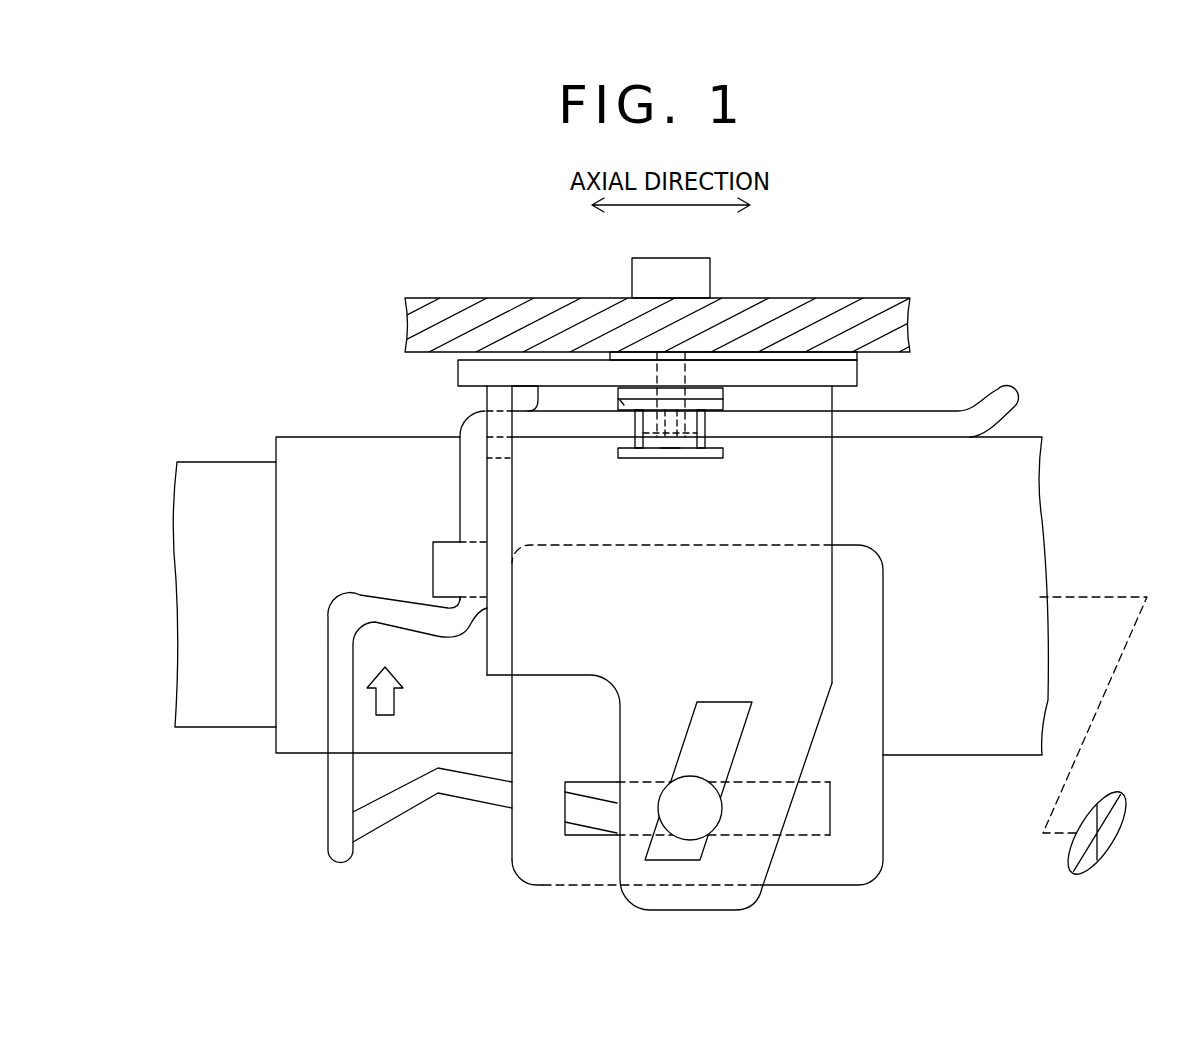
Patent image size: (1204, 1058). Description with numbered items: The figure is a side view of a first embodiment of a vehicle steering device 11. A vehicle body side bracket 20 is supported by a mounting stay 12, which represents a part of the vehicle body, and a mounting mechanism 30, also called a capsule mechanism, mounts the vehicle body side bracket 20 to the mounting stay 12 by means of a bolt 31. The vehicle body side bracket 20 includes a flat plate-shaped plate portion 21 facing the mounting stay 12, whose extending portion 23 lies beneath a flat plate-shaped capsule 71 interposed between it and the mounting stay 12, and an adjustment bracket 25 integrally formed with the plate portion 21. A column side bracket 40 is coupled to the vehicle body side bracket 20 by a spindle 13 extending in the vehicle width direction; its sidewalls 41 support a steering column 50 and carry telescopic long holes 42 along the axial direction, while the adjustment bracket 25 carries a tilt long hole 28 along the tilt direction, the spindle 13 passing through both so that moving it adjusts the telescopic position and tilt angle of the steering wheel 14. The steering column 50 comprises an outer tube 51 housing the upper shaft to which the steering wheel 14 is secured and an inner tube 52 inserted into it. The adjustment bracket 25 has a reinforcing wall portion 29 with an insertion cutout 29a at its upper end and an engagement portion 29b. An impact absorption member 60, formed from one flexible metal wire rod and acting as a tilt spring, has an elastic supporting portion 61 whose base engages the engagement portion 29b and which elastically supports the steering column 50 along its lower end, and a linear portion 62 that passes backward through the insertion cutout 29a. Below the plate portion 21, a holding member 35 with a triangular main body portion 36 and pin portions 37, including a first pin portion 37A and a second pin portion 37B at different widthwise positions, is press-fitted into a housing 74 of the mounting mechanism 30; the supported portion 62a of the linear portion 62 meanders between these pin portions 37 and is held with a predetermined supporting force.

The steering device 11 is at (1044, 276).
The mounting stay 12 is at (893, 303).
The spindle 13 is at (710, 820).
The steering wheel 14 is at (1108, 840).
The vehicle body side bracket 20 is at (703, 317).
The plate portion 21 is at (657, 317).
The extending portion 23 is at (488, 370).
The adjustment bracket 25 is at (887, 534).
The tilt long hole 28 is at (700, 712).
The wall portion 29 is at (474, 623).
The insertion cutout 29a is at (505, 460).
The engagement portion 29b is at (438, 565).
The mounting mechanism 30 is at (627, 252).
The bolt 31 is at (672, 268).
The holding member 35 is at (640, 458).
The main body portion 36 is at (698, 458).
The pin portions 37 is at (695, 470).
The first pin portion 37A is at (672, 447).
The second pin portion 37B is at (703, 425).
The column side bracket 40 is at (743, 727).
The sidewalls 41 is at (884, 840).
The telescopic long holes 42 is at (808, 832).
The steering column 50 is at (342, 541).
The outer tube 51 is at (296, 445).
The inner tube 52 is at (224, 553).
The impact absorption member 60 is at (442, 728).
The elastic supporting portions 61 is at (328, 685).
The linear portions 62 is at (815, 407).
The supported portion 62a is at (625, 405).
The capsule 71 is at (718, 358).
The housing 74 is at (725, 396).